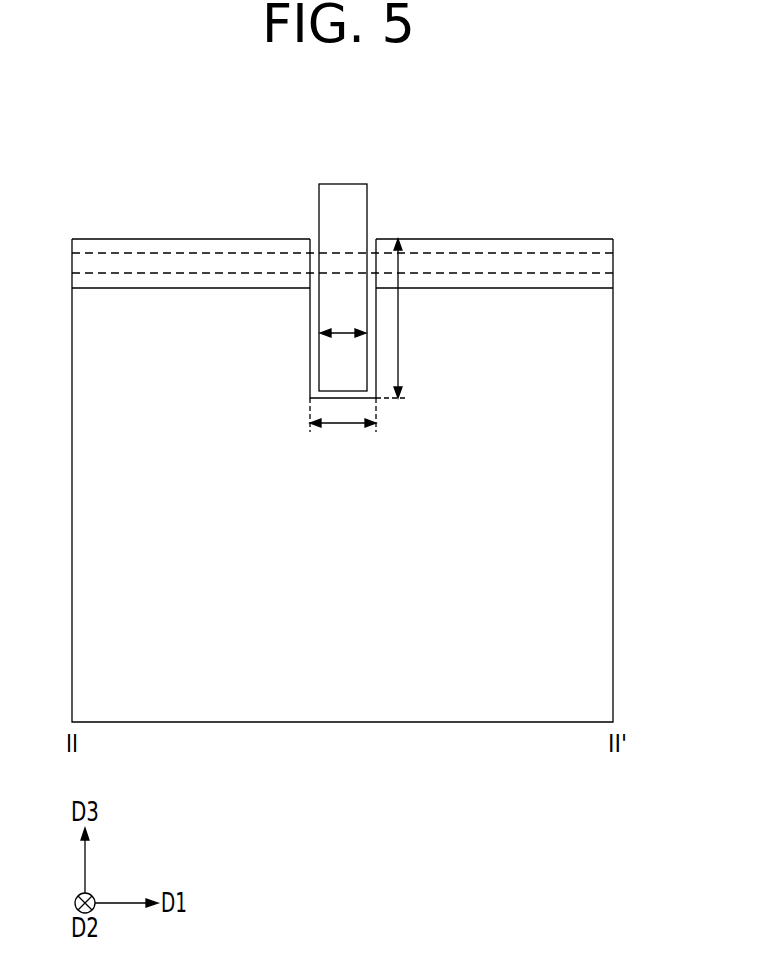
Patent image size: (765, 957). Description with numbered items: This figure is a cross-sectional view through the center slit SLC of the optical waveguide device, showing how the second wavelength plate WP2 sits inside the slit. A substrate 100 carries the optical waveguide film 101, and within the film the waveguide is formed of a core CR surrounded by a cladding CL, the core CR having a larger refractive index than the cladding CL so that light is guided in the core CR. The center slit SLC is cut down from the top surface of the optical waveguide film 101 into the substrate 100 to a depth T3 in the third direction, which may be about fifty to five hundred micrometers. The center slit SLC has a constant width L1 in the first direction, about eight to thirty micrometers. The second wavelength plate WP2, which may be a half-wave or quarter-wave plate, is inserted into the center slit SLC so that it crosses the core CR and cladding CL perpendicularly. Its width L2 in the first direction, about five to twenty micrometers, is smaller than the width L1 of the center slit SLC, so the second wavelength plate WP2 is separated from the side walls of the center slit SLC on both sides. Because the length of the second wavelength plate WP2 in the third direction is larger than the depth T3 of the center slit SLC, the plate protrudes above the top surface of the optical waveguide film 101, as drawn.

The substrate 100 is at (342, 710).
The optical waveguide film 101 is at (493, 238).
The cladding CL is at (159, 246).
The core CR is at (218, 262).
The center slit SLC is at (310, 340).
The second wavelength plate WP2 is at (341, 197).
The depth of the center slit T3 is at (402, 318).
The width of the center slit L1 is at (343, 428).
The width of the wavelength plate L2 is at (343, 349).